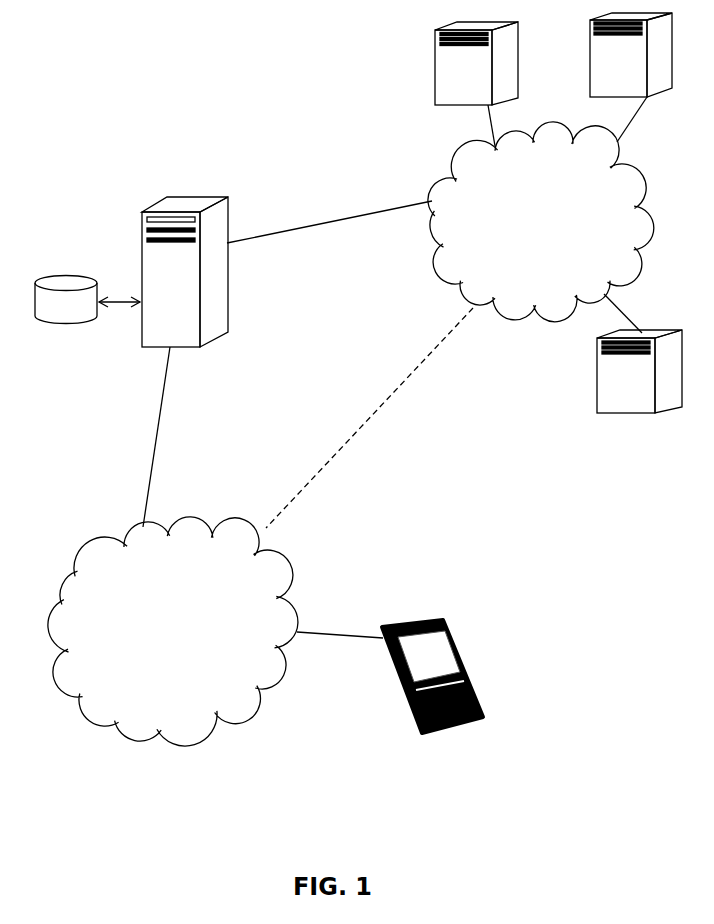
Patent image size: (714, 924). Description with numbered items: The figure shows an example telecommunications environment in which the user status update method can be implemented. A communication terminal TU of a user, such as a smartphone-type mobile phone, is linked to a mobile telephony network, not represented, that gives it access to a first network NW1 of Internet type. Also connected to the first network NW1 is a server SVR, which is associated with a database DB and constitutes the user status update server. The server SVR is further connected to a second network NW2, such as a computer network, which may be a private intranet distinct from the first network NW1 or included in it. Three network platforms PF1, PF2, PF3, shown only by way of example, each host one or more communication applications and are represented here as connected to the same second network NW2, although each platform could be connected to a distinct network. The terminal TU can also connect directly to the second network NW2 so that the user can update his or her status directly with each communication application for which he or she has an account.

The network platform PF1 is at (476, 63).
The network platform PF2 is at (631, 55).
The network platform PF3 is at (639, 371).
The first network NW1 is at (173, 631).
The second network NW2 is at (541, 222).
The server SVR is at (185, 272).
The database DB is at (66, 300).
The communication terminal TU is at (458, 655).